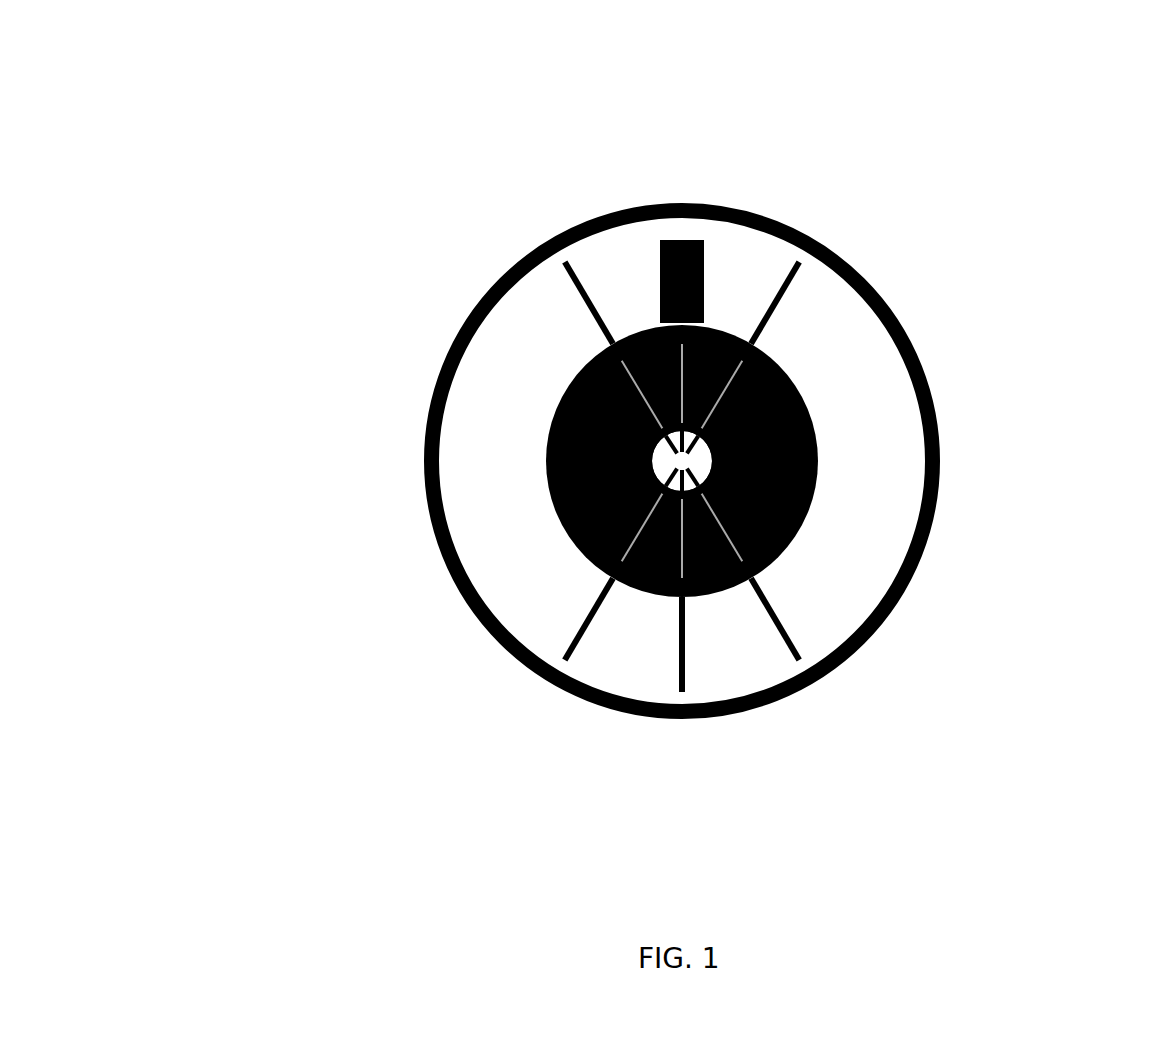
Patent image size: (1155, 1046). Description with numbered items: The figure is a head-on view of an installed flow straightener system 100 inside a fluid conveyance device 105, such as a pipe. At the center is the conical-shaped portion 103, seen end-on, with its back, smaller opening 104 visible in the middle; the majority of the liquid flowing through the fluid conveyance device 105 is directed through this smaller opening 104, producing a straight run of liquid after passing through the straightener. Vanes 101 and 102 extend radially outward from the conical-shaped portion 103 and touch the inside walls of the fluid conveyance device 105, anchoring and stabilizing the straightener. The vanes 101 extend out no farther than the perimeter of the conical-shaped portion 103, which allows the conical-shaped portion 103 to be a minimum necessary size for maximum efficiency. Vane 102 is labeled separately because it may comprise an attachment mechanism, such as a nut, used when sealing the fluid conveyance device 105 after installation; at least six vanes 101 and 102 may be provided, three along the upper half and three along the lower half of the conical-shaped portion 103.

The flow straightener system 100 is at (220, 98).
The vanes 101 is at (545, 238).
The vane with attachment mechanism 102 is at (673, 222).
The conical-shaped portion 103 is at (533, 452).
The smaller opening 104 is at (690, 456).
The fluid conveyance device 105 is at (945, 464).